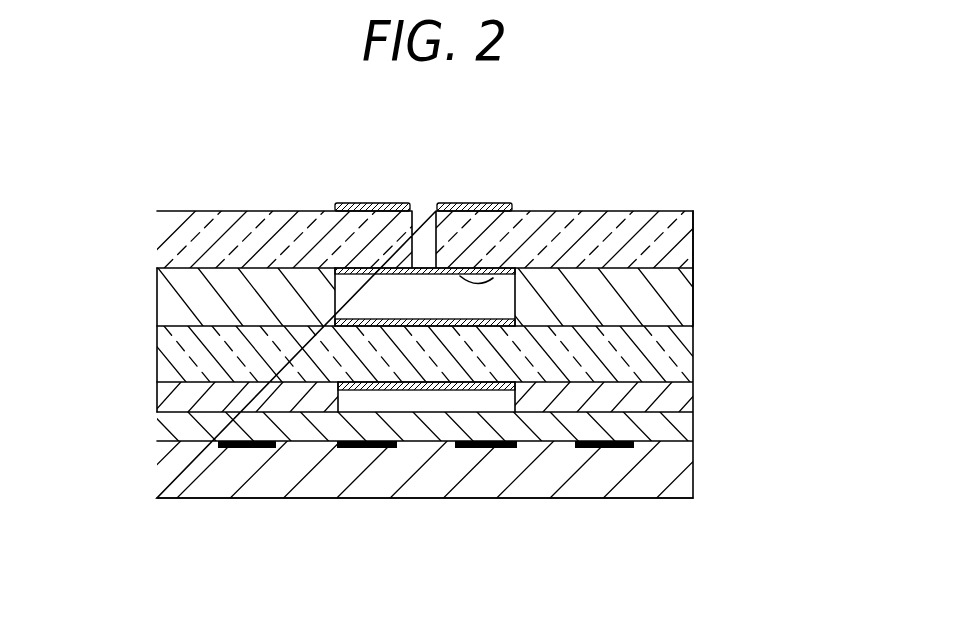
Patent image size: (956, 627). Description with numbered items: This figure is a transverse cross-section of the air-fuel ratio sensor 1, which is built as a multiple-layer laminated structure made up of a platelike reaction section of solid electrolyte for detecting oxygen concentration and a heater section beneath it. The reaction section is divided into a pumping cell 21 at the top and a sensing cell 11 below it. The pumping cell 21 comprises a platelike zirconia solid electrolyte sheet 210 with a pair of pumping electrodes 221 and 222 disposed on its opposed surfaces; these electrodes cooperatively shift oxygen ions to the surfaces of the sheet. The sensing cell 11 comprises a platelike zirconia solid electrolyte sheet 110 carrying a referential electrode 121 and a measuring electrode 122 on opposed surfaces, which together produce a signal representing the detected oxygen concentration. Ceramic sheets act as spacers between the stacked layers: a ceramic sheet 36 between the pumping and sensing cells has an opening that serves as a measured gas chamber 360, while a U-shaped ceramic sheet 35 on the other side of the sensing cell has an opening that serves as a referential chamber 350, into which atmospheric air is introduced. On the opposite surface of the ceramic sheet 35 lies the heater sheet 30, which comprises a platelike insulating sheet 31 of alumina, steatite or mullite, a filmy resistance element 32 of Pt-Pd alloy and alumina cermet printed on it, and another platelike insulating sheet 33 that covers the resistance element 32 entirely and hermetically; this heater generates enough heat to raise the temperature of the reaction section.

The air-fuel ratio sensor 1 is at (435, 168).
The pumping cell 21 is at (703, 228).
The solid electrolyte sheet 210 is at (183, 235).
The pumping electrode 222 is at (372, 202).
The pumping electrode 221 is at (505, 266).
The ceramic sheet 36 is at (177, 300).
The measured gas chamber 360 is at (355, 300).
The referential electrode 121 is at (458, 318).
The solid electrolyte sheet 110 is at (660, 350).
The sensing cell 11 is at (148, 355).
The measuring electrode 122 is at (463, 391).
The ceramic sheet 35 is at (177, 392).
The referential chamber 350 is at (418, 398).
The insulating sheet 33 is at (177, 428).
The resistance element 32 is at (607, 447).
The insulating sheet 31 is at (221, 485).
The heater sheet 30 is at (697, 412).